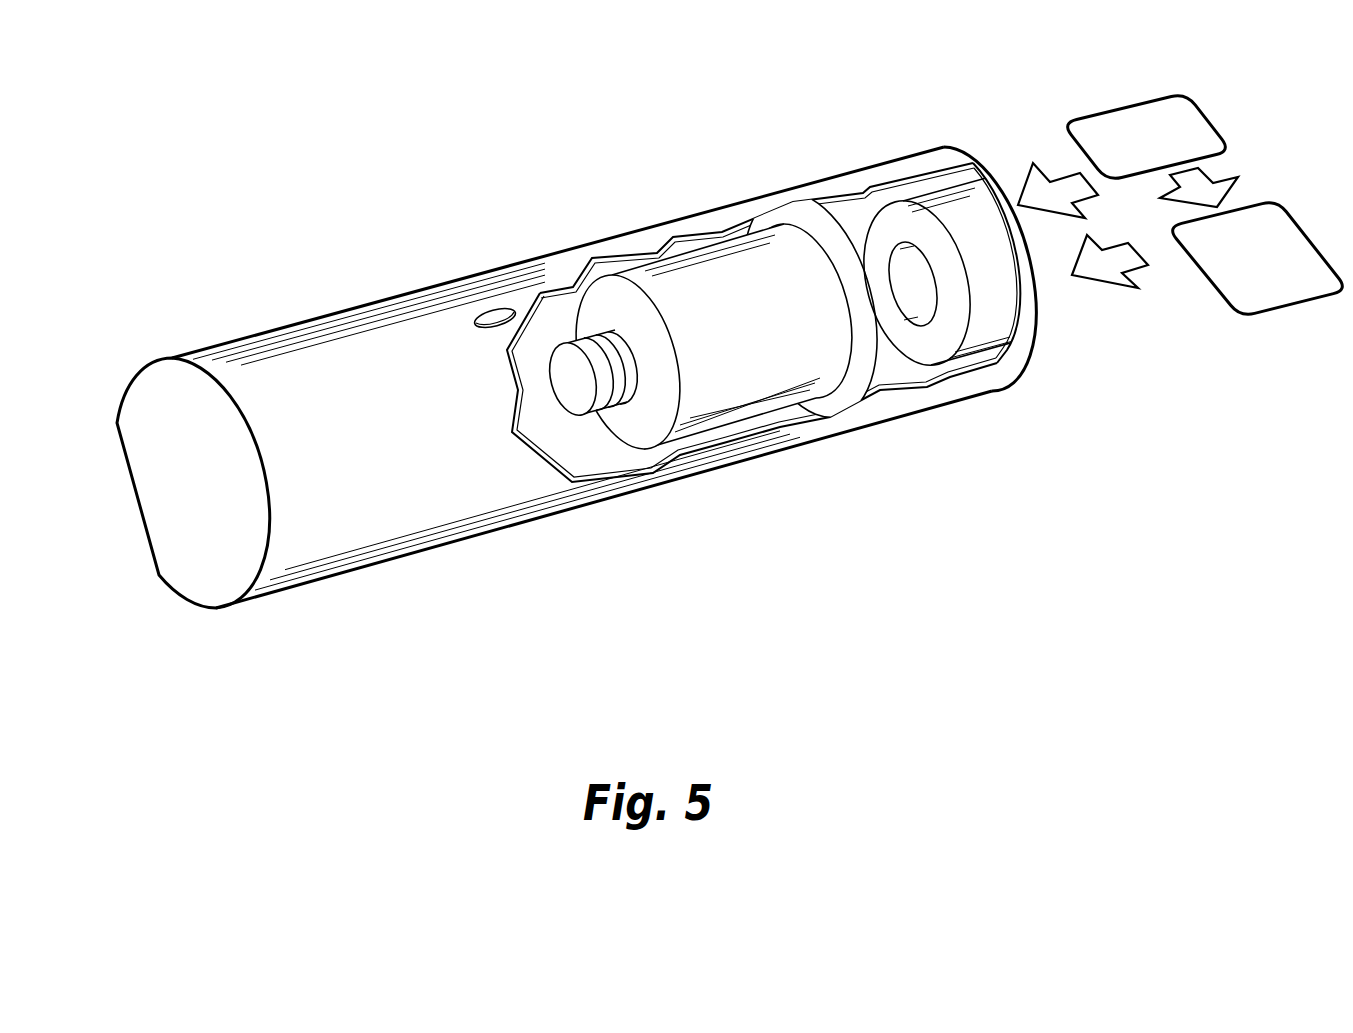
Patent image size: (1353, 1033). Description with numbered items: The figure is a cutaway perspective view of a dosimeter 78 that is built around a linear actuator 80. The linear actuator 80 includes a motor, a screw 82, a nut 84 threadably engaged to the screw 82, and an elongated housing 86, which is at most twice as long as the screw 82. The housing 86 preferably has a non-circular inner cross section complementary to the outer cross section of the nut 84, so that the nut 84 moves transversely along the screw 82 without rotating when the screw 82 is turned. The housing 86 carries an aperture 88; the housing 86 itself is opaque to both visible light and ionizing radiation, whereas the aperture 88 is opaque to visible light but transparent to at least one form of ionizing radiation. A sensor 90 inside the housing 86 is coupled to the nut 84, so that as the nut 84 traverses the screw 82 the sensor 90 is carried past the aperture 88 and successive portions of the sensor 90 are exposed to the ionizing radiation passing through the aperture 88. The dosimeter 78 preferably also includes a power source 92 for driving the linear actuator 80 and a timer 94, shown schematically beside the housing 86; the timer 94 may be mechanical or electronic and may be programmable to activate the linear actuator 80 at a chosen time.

The dosimeter 78 is at (576, 448).
The linear actuator 80 is at (806, 305).
The screw 82 is at (598, 325).
The nut 84 is at (873, 403).
The elongated housing 86 is at (312, 316).
The aperture 88 is at (482, 311).
The sensor 90 is at (732, 393).
The power source 92 is at (1207, 258).
The timer 94 is at (1128, 157).